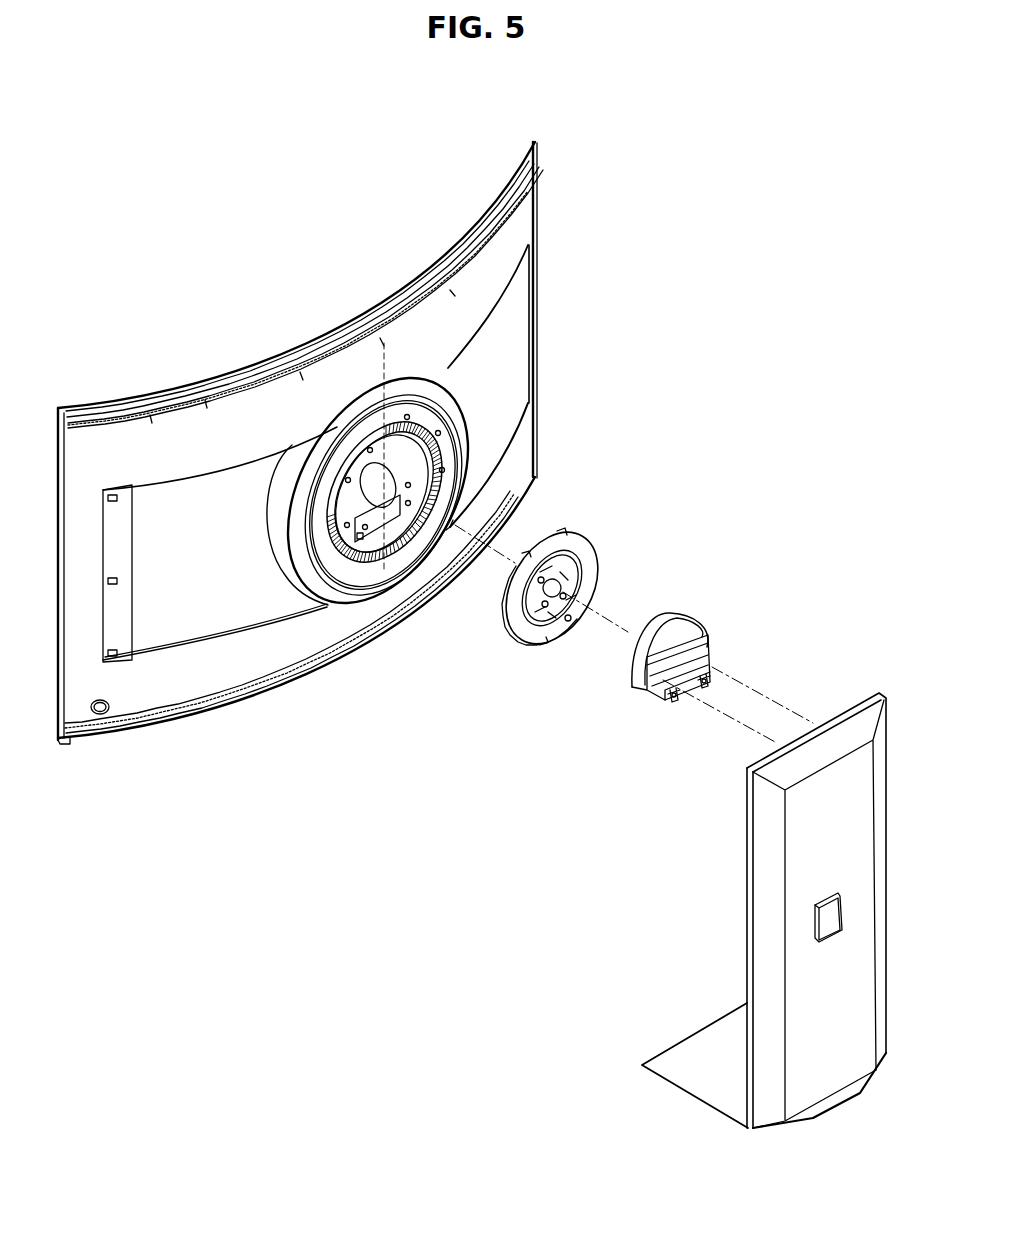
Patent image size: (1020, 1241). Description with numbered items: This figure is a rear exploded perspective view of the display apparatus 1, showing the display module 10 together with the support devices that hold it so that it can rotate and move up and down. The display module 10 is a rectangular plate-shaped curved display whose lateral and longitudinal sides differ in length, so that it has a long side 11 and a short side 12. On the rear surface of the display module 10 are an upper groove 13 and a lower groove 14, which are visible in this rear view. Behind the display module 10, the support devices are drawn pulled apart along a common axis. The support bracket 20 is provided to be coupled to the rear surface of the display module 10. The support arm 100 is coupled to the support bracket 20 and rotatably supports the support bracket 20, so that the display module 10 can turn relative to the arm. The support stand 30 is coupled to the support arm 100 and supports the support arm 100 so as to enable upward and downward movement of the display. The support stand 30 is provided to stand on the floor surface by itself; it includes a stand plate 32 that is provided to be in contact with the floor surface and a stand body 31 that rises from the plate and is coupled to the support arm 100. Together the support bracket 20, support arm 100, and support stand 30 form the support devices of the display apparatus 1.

The display apparatus 1 is at (792, 200).
The display module 10 is at (395, 259).
The long side 11 is at (331, 335).
The short side 12 is at (538, 255).
The upper groove 13 is at (412, 425).
The lower groove 14 is at (365, 525).
The support bracket 20 is at (598, 527).
The support arm 100 is at (706, 626).
The support stand 30 is at (866, 683).
The stand body 31 is at (746, 922).
The stand plate 32 is at (687, 1047).